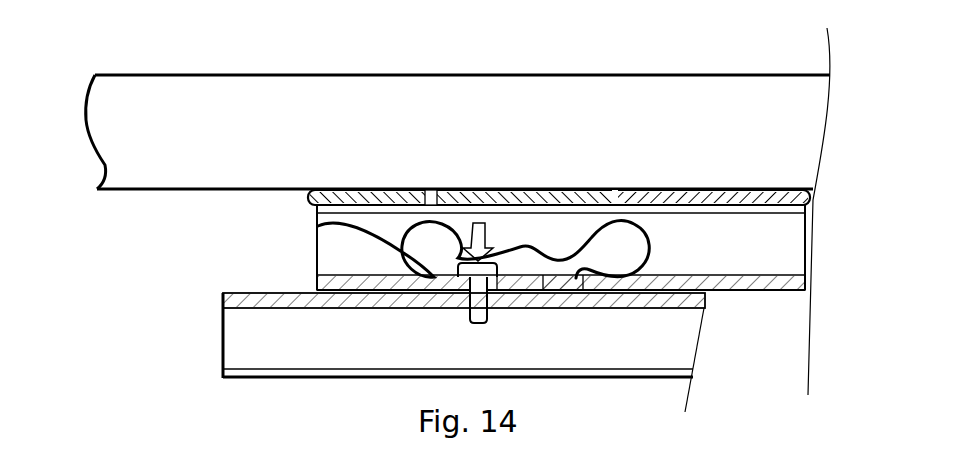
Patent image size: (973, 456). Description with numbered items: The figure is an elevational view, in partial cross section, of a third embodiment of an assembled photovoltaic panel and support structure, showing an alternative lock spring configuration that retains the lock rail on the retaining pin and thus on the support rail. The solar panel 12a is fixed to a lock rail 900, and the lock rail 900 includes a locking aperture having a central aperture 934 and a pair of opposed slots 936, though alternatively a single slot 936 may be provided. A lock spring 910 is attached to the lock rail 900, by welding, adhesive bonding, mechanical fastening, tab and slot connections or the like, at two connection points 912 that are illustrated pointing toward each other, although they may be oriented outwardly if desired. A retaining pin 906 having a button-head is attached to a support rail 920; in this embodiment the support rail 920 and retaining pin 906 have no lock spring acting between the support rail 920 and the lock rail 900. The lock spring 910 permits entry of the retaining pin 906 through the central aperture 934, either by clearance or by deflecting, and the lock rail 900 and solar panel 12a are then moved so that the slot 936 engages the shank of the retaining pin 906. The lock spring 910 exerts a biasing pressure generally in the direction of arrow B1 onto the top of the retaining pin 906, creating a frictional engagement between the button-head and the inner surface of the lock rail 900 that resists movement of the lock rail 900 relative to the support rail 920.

The solar panel 12a is at (763, 135).
The lock rail 900 is at (773, 245).
The lock spring 910 is at (553, 252).
The connection points 912 is at (330, 224).
The central aperture 934 is at (517, 280).
The slot 936 is at (583, 268).
The retaining pin 906 is at (474, 305).
The support rail 920 is at (216, 357).
The arrow B1 is at (497, 241).